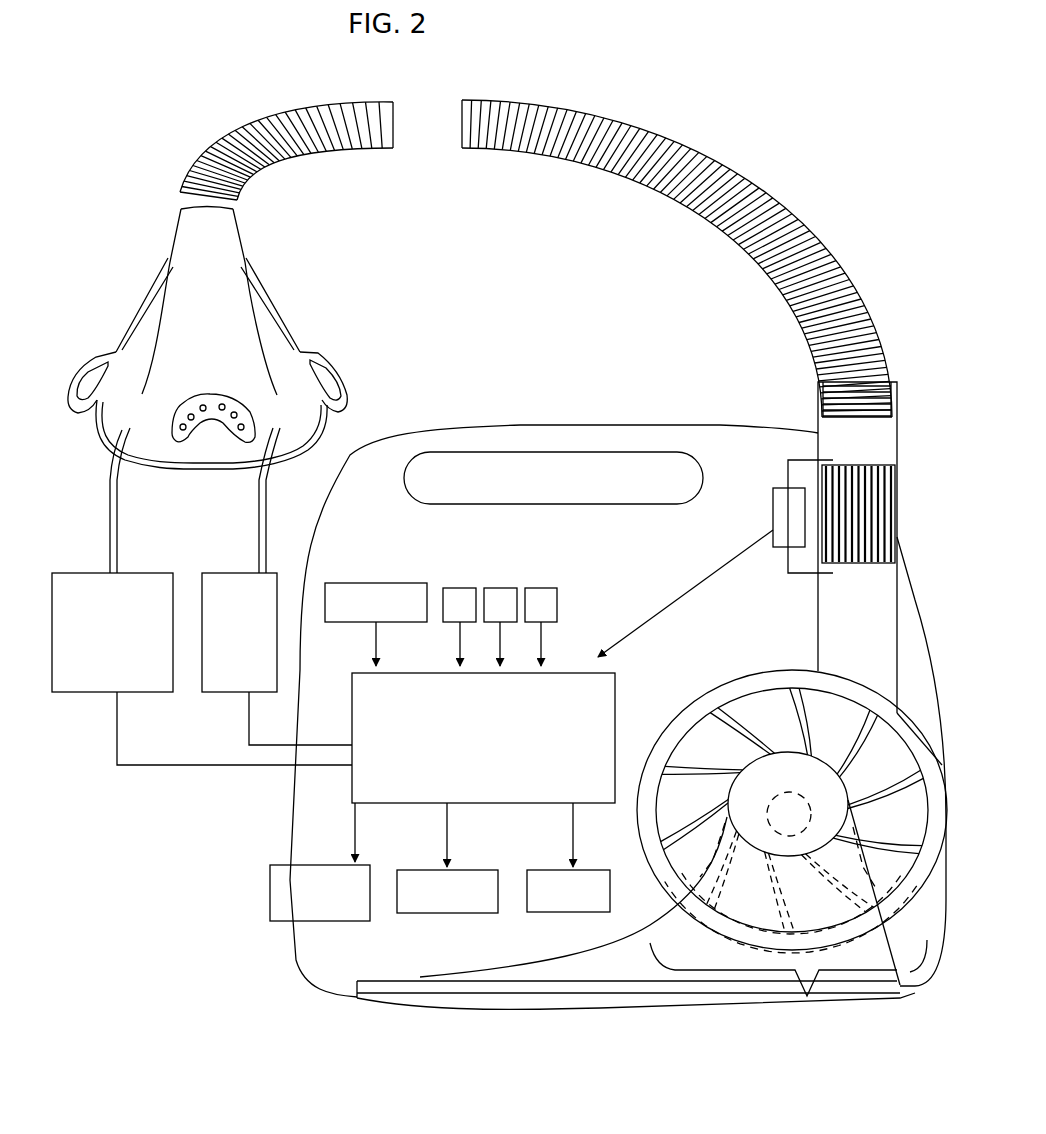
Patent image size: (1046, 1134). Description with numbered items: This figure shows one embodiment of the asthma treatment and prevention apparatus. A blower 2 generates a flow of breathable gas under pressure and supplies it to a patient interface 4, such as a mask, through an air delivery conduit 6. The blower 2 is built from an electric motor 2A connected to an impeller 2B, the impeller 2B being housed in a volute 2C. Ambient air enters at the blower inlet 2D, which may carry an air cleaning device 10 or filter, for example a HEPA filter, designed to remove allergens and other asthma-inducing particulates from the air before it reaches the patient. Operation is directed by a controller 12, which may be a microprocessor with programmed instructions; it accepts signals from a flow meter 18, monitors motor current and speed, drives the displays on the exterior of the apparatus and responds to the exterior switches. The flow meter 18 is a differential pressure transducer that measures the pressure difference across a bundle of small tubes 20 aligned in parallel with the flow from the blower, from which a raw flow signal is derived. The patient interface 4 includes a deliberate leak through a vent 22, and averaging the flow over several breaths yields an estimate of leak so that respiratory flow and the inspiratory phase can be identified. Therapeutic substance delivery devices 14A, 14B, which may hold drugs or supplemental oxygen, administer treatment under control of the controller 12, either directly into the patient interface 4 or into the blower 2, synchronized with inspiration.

The blower 2 is at (807, 997).
The electric motor 2A is at (788, 750).
The impeller 2B is at (800, 690).
The volute 2C is at (723, 693).
The blower inlet 2D is at (623, 957).
The patient interface 4 is at (285, 362).
The air delivery conduit 6 is at (517, 110).
The air cleaning device 10 is at (532, 985).
The controller 12 is at (352, 783).
The therapeutic substance delivery device 14A is at (93, 680).
The therapeutic substance delivery device 14B is at (205, 590).
The flow meter 18 is at (773, 497).
The bundle of small tubes 20 is at (863, 463).
The vent 22 is at (172, 436).